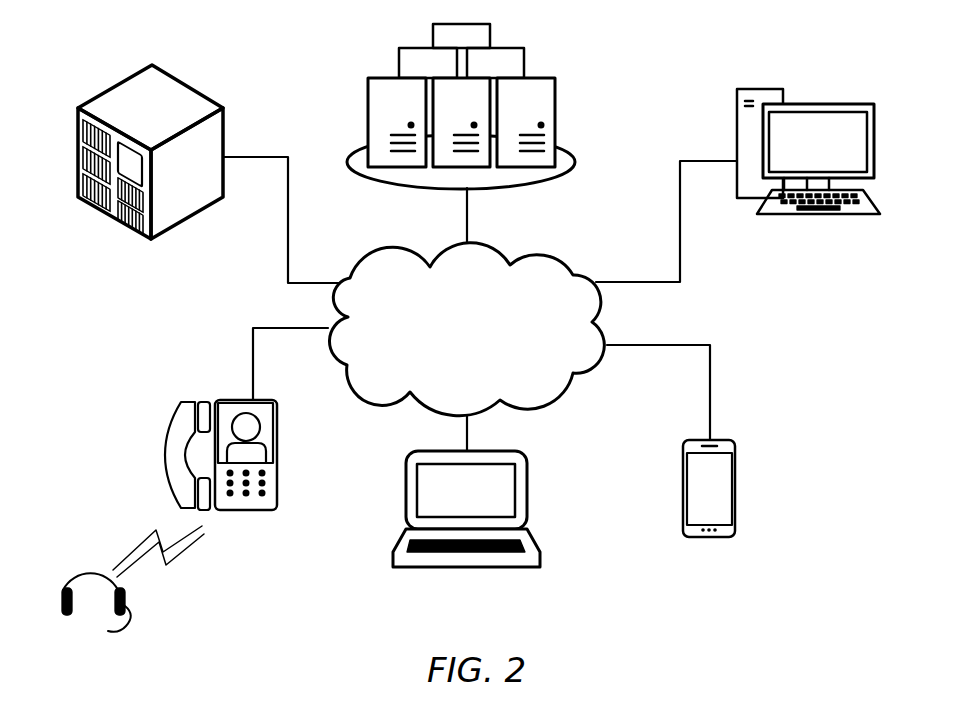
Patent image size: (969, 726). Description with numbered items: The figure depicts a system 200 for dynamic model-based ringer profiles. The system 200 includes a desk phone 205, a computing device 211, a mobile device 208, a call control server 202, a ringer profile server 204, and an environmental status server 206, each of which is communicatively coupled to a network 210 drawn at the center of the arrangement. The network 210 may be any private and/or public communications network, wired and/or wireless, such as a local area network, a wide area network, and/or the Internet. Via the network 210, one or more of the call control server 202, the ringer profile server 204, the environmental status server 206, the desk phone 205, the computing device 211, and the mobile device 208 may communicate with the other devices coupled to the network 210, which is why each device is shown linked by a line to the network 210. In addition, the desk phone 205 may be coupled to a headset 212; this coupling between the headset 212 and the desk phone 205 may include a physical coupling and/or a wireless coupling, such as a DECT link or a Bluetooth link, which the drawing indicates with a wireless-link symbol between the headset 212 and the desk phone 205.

The system 200 is at (668, 592).
The call control server 202 is at (175, 78).
The ringer profile server 204 is at (575, 148).
The desk phone 205 is at (240, 398).
The environmental status server 206 is at (778, 88).
The mobile device 208 is at (735, 470).
The network 210 is at (447, 354).
The computing device 211 is at (403, 569).
The headset 212 is at (66, 590).